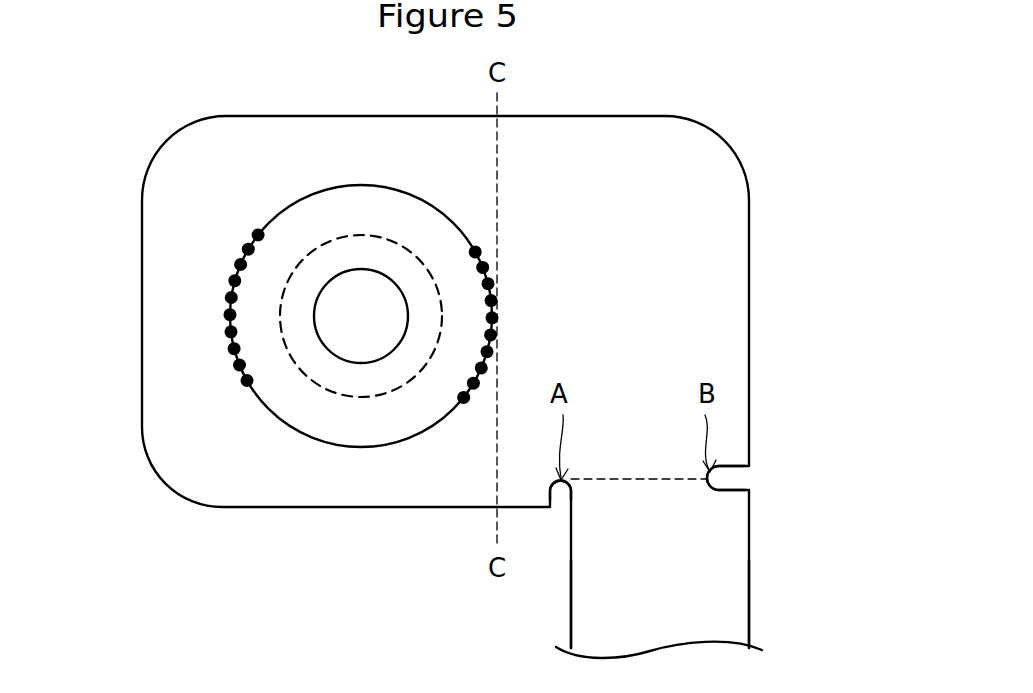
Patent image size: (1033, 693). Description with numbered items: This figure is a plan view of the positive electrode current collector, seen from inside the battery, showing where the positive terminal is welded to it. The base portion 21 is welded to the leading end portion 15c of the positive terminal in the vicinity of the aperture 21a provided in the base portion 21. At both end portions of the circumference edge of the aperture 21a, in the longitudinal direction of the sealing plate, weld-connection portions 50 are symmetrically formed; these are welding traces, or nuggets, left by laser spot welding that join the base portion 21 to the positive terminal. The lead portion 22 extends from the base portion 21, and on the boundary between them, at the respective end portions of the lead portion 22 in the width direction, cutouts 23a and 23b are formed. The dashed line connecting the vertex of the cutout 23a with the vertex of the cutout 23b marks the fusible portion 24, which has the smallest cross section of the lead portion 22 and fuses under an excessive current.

The base portion 21 is at (188, 225).
The aperture 21a is at (288, 348).
The leading end portion 15c is at (278, 383).
The weld-connection portions 50 is at (230, 294).
The lead portion 22 is at (730, 599).
The cutout 23a is at (560, 493).
The cutout 23b is at (730, 478).
The fusible portion 24 is at (670, 485).